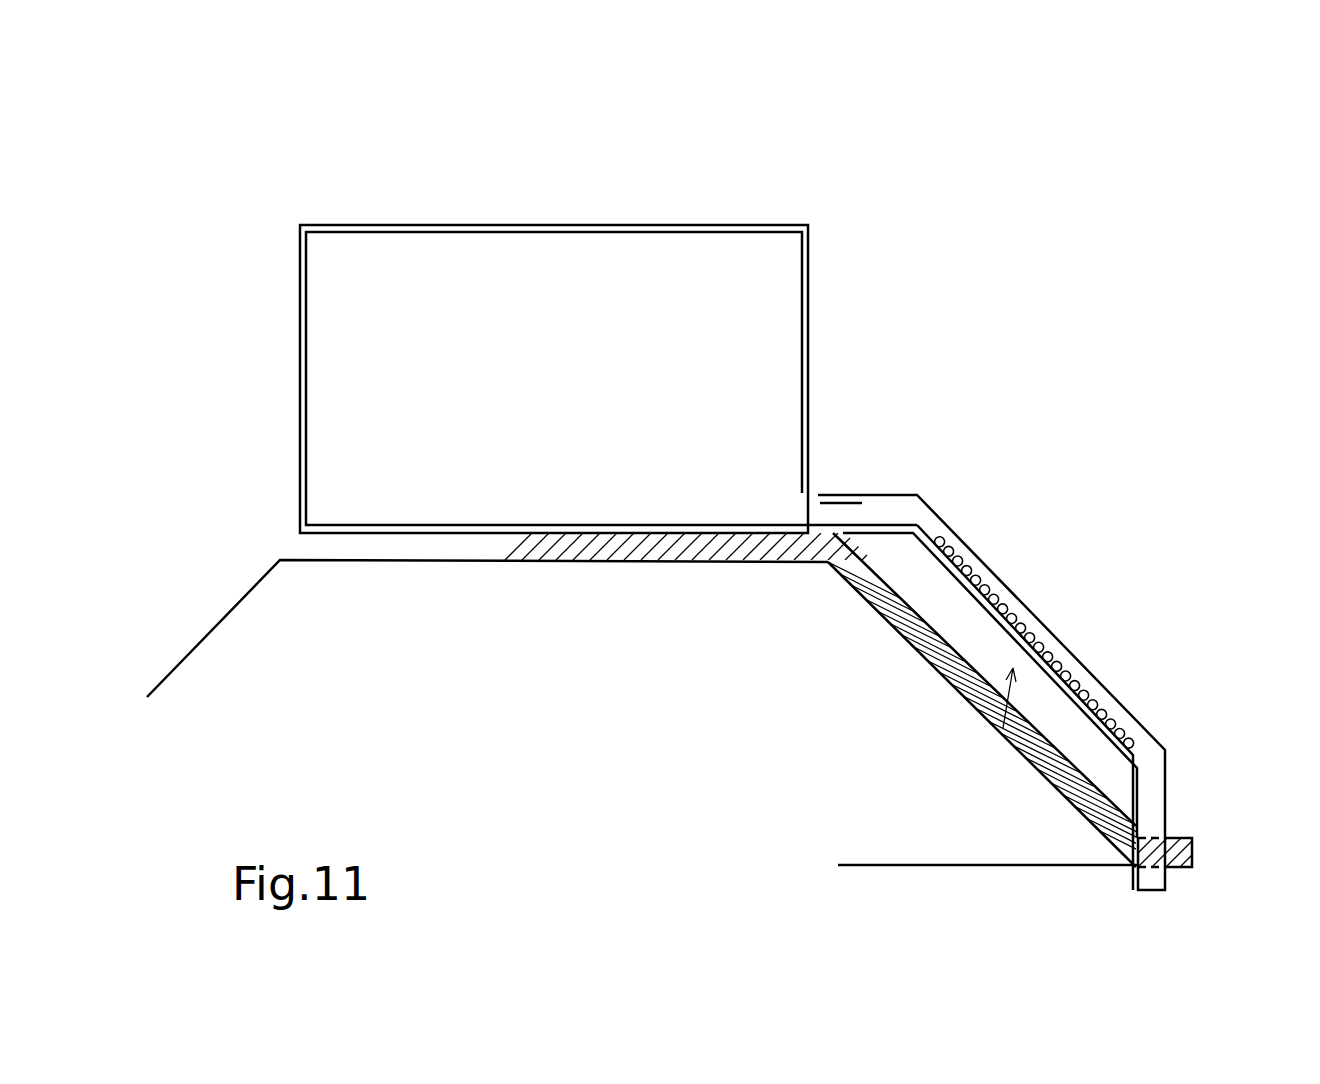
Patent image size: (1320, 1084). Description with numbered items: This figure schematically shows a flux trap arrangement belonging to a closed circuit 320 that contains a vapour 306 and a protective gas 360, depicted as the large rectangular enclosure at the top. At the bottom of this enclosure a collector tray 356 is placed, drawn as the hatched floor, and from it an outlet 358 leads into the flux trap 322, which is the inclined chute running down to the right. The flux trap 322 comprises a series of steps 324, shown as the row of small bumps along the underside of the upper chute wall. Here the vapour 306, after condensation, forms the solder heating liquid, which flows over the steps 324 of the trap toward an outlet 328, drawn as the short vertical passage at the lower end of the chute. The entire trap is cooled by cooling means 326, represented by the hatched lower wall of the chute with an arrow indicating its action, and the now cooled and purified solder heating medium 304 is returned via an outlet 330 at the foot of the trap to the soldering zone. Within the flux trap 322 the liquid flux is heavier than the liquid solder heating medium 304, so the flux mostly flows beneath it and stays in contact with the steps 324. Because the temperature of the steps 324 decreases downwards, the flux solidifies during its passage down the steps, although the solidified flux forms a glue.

The closed circuit 320 is at (750, 172).
The vapour 306 is at (352, 262).
The protective gas 360 is at (548, 282).
The outlet 358 is at (833, 517).
The solder heating medium 304 is at (922, 515).
The flux trap 322 is at (1100, 690).
The steps 324 is at (1000, 606).
The collector tray 356 is at (490, 478).
The cooling means 326 is at (1000, 745).
The outlet 328 is at (1152, 800).
The outlet 330 is at (1155, 875).